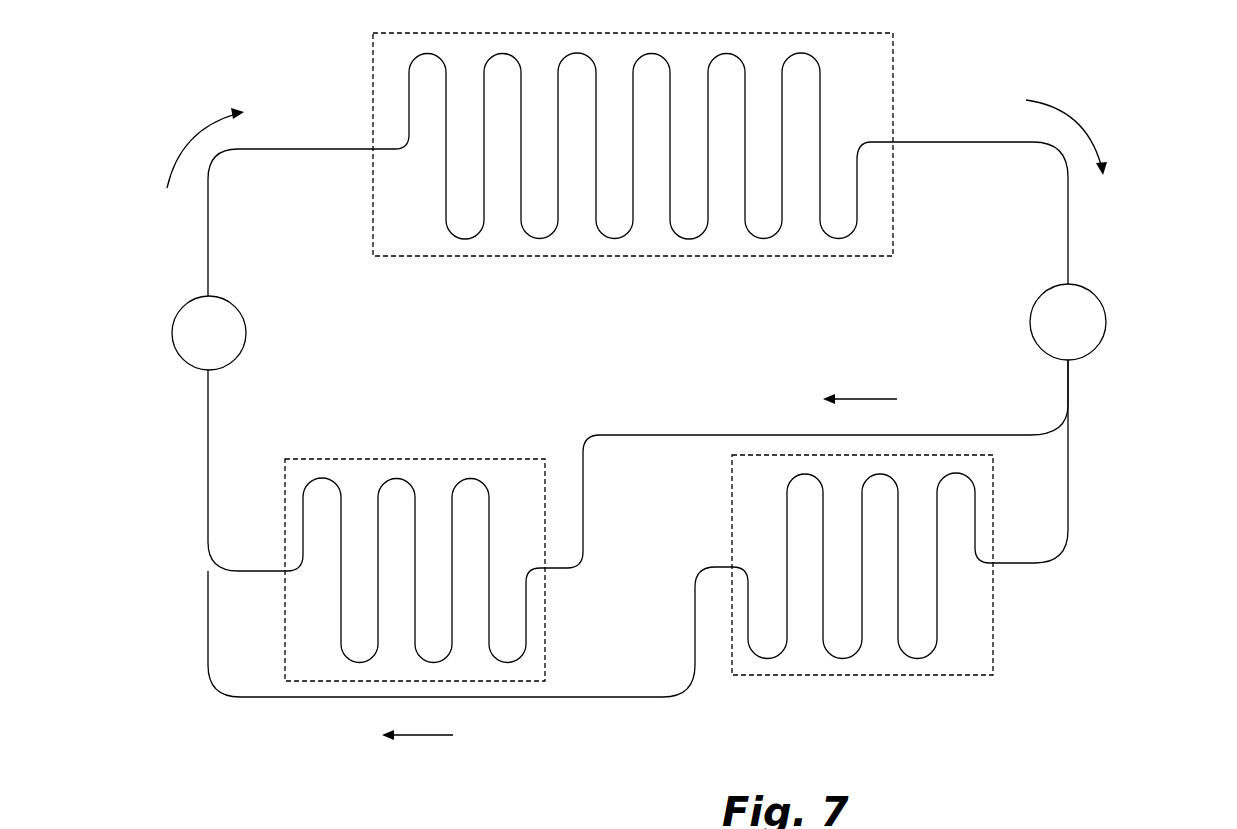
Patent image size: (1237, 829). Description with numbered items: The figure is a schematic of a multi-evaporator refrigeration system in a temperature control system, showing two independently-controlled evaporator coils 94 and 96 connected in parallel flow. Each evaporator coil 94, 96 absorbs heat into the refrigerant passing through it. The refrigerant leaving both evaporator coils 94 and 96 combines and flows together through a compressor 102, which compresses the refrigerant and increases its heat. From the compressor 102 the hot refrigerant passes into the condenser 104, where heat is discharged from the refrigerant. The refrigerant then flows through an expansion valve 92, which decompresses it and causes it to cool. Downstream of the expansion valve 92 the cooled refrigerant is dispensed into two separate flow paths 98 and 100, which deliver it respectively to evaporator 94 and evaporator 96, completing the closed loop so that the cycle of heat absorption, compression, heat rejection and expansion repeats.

The expansion valve 92 is at (1107, 322).
The evaporator coil 94 is at (490, 457).
The evaporator coil 96 is at (937, 675).
The flow path 98 is at (267, 571).
The flow path 100 is at (1032, 563).
The compressor 102 is at (172, 333).
The condenser 104 is at (893, 63).